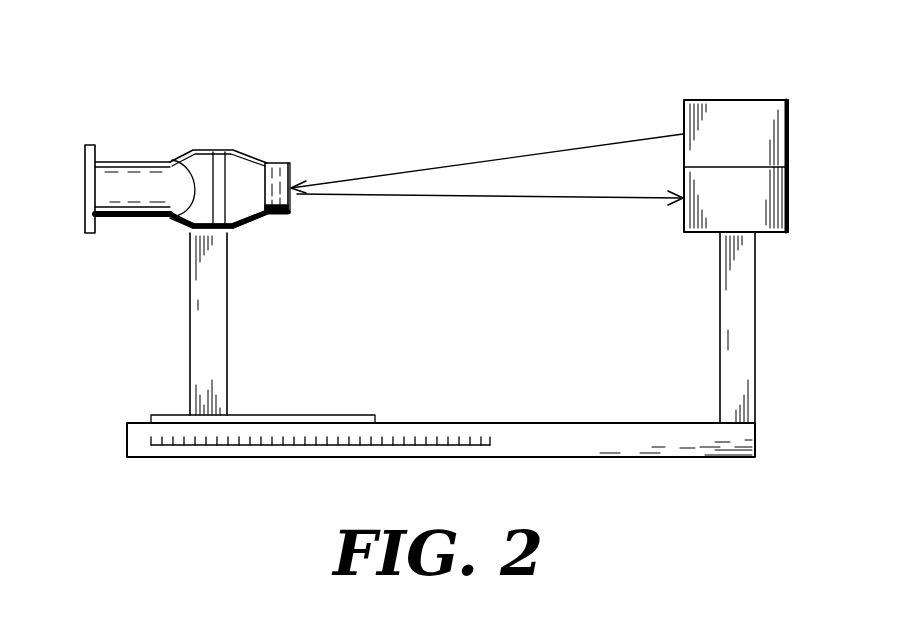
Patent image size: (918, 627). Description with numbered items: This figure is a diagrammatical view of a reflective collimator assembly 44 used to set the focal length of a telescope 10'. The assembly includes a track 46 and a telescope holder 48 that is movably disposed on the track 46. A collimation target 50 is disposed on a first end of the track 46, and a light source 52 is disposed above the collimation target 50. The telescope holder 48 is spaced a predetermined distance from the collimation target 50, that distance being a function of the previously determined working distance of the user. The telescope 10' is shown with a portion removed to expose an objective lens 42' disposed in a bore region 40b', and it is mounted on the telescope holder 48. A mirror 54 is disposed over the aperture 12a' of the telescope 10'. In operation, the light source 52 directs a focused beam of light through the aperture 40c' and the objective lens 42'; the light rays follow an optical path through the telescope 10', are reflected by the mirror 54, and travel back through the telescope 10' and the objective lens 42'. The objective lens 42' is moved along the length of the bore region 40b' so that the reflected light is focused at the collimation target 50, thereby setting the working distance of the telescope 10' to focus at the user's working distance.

The telescope 10' is at (210, 172).
The aperture 12a' is at (128, 214).
The bore region 40b' is at (287, 155).
The aperture 40c' is at (330, 168).
The objective lens 42' is at (282, 238).
The reflective collimator assembly 44 is at (517, 92).
The track 46 is at (642, 445).
The telescope holder 48 is at (213, 323).
The collimation target 50 is at (775, 205).
The light source 52 is at (777, 130).
The mirror 54 is at (90, 147).